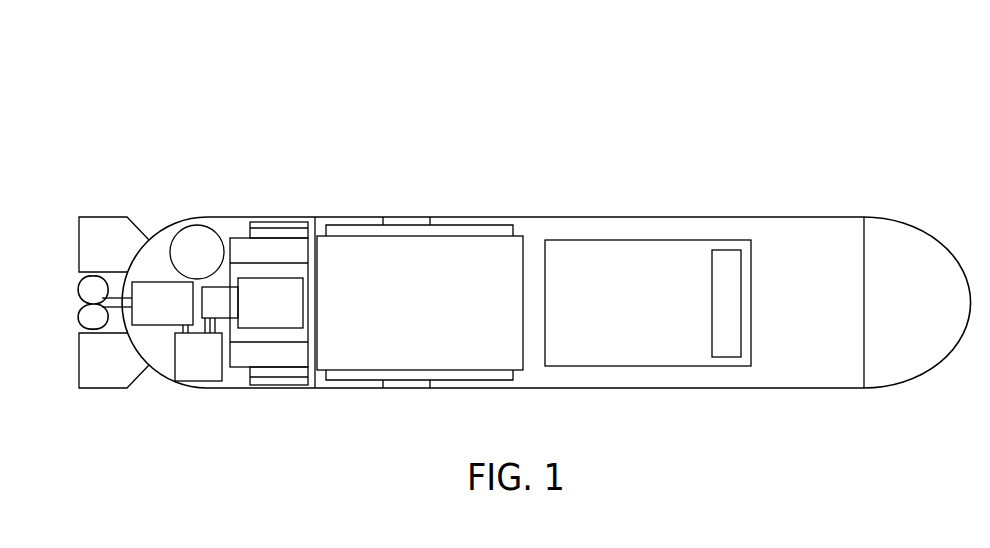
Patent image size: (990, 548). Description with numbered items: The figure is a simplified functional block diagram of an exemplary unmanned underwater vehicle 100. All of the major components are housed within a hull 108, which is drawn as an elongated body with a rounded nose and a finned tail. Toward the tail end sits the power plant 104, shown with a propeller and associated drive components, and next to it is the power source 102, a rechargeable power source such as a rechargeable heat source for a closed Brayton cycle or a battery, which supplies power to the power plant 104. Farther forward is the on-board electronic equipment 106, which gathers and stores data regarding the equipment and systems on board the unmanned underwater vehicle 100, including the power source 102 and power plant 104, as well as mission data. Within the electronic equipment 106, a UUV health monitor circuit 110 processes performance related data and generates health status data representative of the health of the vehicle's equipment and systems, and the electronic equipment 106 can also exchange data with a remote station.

The unmanned underwater vehicle 100 is at (643, 165).
The power source 102 is at (462, 236).
The power plant 104 is at (245, 197).
The on-board electronic equipment 106 is at (752, 292).
The hull 108 is at (817, 217).
The UUV health monitor circuit 110 is at (727, 250).